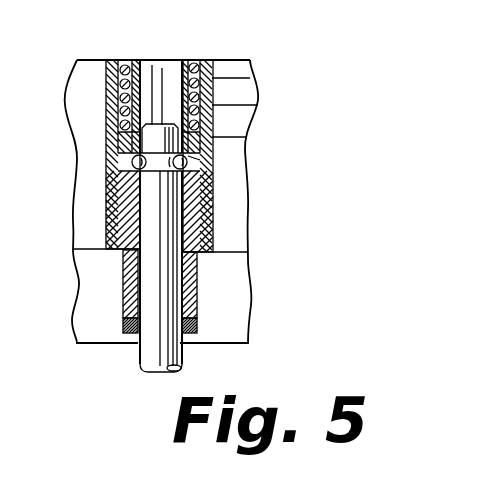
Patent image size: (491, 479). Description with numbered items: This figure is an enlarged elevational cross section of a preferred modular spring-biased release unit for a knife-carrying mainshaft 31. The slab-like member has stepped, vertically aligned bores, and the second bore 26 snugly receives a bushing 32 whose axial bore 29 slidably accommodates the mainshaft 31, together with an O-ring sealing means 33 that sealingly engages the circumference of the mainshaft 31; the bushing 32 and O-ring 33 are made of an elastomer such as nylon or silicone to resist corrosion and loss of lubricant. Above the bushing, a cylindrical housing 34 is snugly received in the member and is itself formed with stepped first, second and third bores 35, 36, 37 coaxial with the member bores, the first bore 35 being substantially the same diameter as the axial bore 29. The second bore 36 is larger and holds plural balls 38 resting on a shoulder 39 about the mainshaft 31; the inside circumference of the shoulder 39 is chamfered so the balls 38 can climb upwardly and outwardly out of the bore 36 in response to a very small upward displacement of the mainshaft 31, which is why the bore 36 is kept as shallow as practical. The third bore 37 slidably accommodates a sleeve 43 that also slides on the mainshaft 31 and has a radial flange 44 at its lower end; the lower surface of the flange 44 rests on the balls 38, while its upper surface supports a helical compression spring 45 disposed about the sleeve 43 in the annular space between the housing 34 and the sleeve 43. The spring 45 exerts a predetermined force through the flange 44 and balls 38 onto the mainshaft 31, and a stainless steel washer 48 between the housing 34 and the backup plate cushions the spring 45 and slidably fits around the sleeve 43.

The second bore 26 is at (199, 278).
The axial bore 29 is at (138, 283).
The mainshaft 31 is at (150, 355).
The bushing 32 is at (197, 305).
The O-ring sealing means 33 is at (123, 326).
The cylindrical housing 34 is at (252, 105).
The first bore 35 is at (125, 214).
The second bore 36 is at (130, 170).
The third bore 37 is at (108, 105).
The balls 38 is at (198, 166).
The shoulder 39 is at (204, 160).
The sleeve 43 is at (137, 60).
The radial flange 44 is at (253, 137).
The helical compression spring 45 is at (250, 78).
The stainless steel washer 48 is at (203, 60).